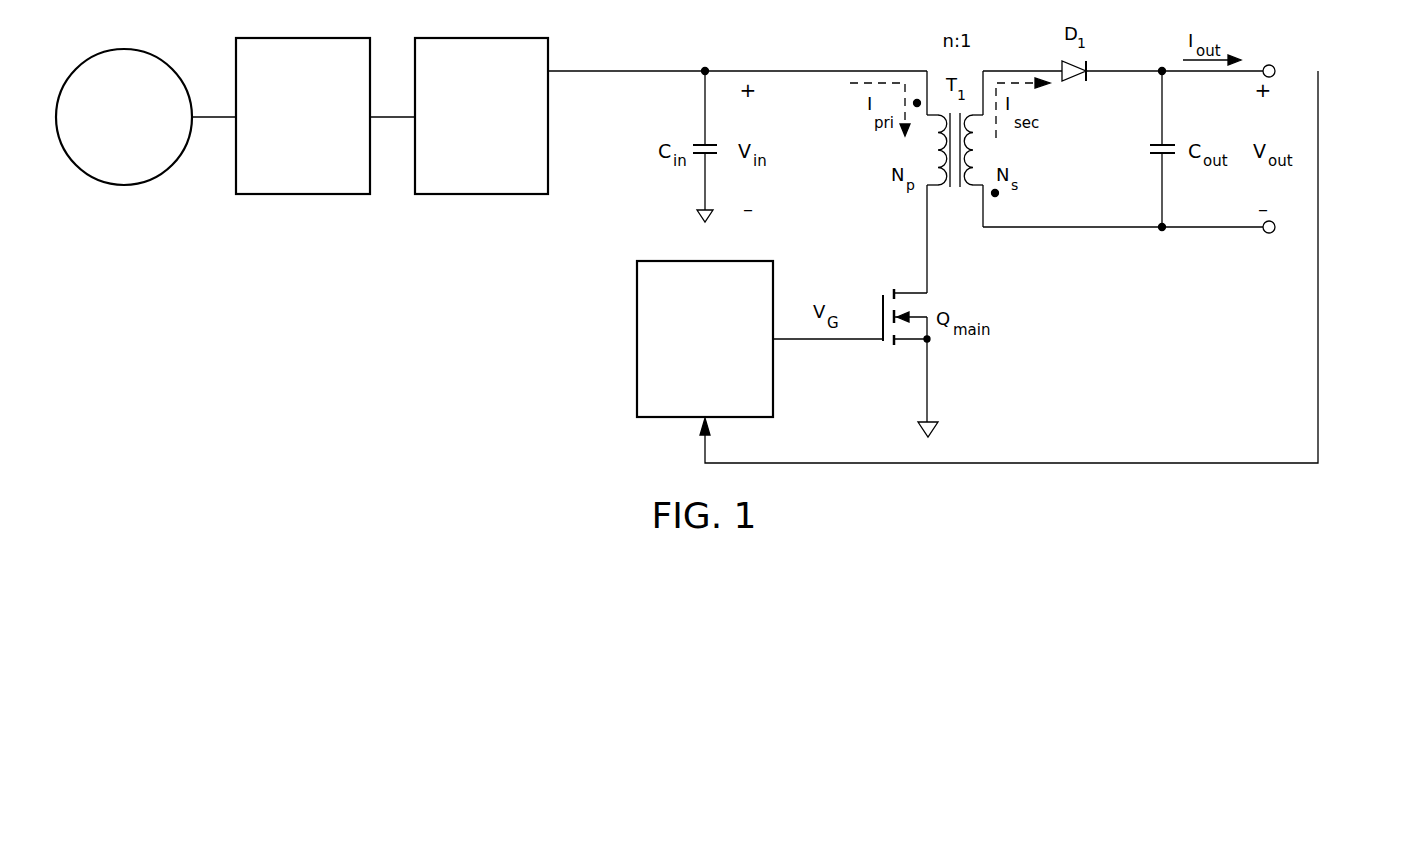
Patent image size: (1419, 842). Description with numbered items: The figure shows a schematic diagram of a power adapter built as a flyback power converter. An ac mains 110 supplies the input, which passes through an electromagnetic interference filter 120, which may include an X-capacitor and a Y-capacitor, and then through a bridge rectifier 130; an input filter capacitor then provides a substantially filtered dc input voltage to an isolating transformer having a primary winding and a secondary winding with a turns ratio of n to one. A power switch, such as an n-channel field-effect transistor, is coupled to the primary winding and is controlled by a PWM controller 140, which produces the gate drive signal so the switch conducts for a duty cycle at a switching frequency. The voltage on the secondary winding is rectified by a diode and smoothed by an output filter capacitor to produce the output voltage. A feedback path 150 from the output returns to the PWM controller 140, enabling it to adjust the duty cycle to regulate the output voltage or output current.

The ac mains 110 is at (101, 159).
The electromagnetic interference (EMI) filter 120 is at (281, 160).
The bridge rectifier 130 is at (459, 153).
The pulse-width modulator (PWM) controller 140 is at (683, 373).
The feedback path 150 is at (1318, 350).